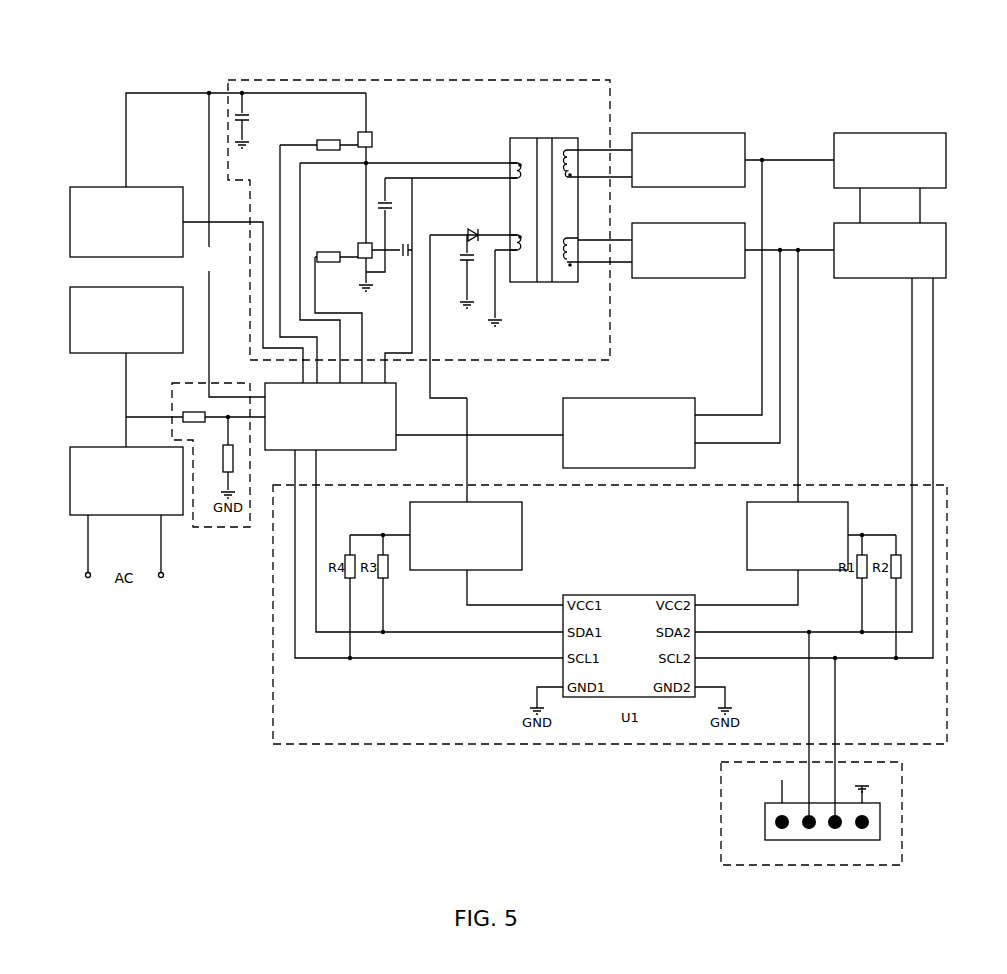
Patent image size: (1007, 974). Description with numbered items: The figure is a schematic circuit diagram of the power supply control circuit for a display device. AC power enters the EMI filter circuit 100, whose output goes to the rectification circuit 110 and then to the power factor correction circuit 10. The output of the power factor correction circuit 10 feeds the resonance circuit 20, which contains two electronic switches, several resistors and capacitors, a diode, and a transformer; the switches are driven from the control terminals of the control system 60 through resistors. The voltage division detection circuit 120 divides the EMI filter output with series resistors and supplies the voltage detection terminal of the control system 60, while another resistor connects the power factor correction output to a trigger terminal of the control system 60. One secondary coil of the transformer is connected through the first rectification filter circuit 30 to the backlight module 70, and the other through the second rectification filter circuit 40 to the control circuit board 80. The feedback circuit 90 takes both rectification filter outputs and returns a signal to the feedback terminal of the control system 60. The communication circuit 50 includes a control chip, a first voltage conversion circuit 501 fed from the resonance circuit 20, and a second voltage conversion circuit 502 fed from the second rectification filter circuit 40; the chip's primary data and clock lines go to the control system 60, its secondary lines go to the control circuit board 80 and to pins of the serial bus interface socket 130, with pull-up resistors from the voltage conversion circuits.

The power factor correction circuit 10 is at (70, 212).
The rectification circuit 110 is at (70, 312).
The EMI filter circuit 100 is at (70, 472).
The voltage division detection circuit 120 is at (194, 383).
The resonance circuit 20 is at (392, 80).
The first rectification filter circuit 30 is at (690, 133).
The second rectification filter circuit 40 is at (690, 223).
The backlight module 70 is at (868, 133).
The control circuit board 80 is at (868, 223).
The feedback circuit 90 is at (630, 398).
The control system 60 is at (396, 405).
The communication circuit 50 is at (822, 485).
The first voltage conversion circuit 501 is at (522, 530).
The second voltage conversion circuit 502 is at (747, 533).
The serial bus interface socket 130 is at (902, 792).